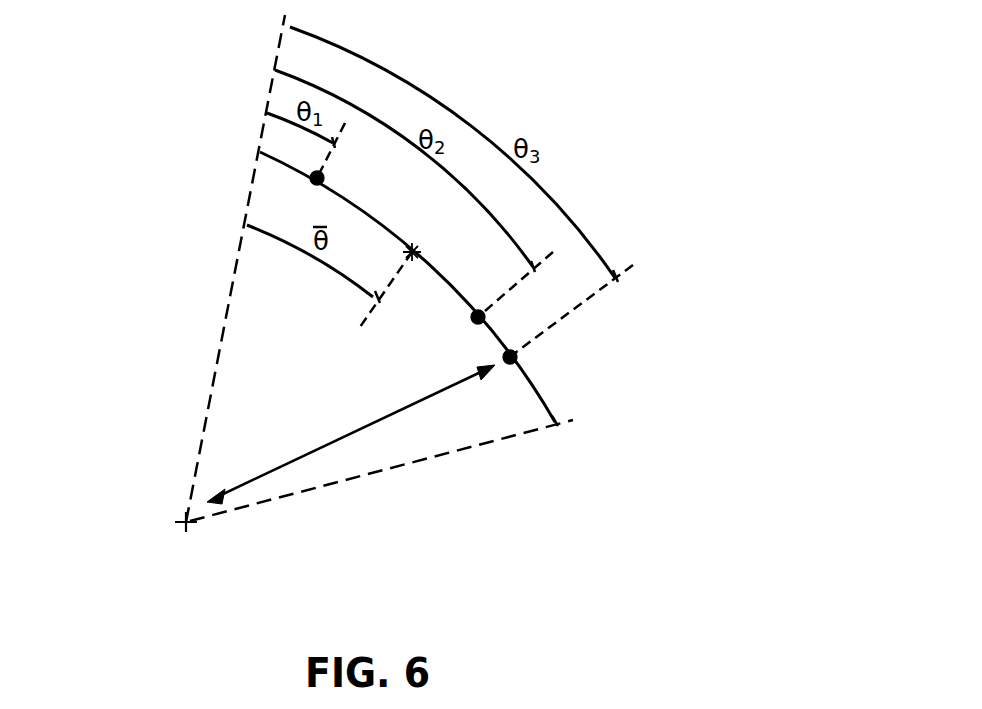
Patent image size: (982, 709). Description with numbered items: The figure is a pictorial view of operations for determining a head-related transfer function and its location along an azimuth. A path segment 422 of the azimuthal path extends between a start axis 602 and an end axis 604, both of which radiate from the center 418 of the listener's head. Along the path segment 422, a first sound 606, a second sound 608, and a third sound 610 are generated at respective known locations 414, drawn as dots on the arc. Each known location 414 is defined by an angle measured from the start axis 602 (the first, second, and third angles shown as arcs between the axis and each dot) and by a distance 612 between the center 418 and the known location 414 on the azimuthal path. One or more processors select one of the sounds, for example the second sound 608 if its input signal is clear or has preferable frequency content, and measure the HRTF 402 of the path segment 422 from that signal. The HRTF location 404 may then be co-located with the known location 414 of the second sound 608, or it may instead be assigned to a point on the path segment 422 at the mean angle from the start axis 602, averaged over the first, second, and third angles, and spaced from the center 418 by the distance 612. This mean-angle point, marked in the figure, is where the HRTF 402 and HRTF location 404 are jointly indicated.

The known locations 414 is at (427, 256).
The first sound 606 is at (311, 180).
The second sound 608 is at (484, 317).
The third sound 610 is at (517, 357).
The HRTF 402 is at (560, 327).
The HRTF location 404 is at (413, 258).
The center 418 is at (187, 517).
The path segment 422 is at (545, 406).
The start axis 602 is at (213, 377).
The end axis 604 is at (395, 467).
The distance 612 is at (293, 462).